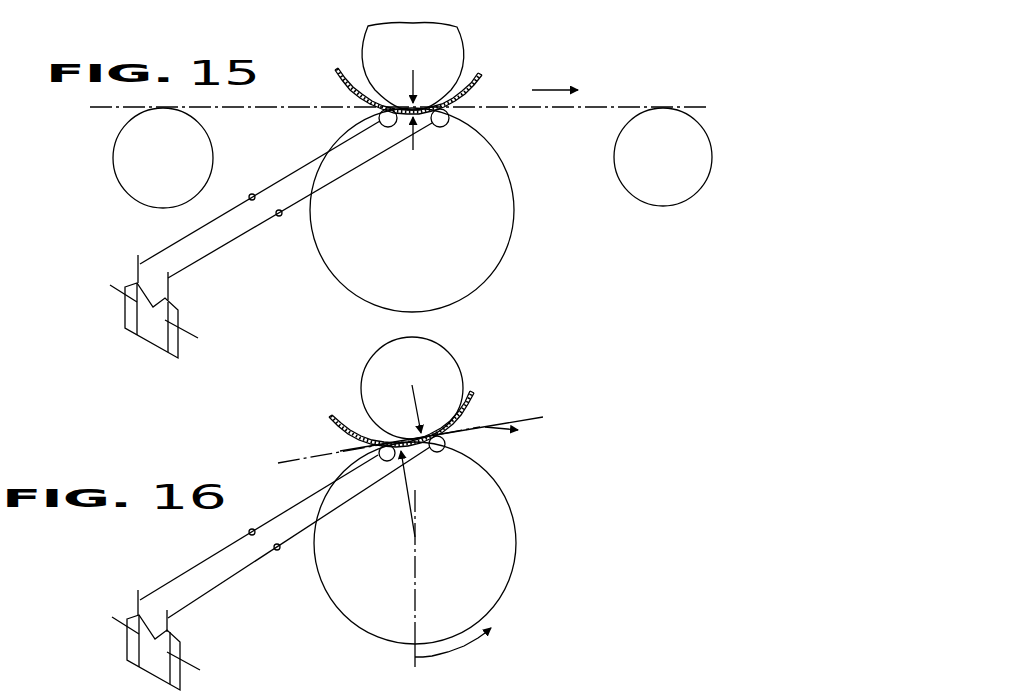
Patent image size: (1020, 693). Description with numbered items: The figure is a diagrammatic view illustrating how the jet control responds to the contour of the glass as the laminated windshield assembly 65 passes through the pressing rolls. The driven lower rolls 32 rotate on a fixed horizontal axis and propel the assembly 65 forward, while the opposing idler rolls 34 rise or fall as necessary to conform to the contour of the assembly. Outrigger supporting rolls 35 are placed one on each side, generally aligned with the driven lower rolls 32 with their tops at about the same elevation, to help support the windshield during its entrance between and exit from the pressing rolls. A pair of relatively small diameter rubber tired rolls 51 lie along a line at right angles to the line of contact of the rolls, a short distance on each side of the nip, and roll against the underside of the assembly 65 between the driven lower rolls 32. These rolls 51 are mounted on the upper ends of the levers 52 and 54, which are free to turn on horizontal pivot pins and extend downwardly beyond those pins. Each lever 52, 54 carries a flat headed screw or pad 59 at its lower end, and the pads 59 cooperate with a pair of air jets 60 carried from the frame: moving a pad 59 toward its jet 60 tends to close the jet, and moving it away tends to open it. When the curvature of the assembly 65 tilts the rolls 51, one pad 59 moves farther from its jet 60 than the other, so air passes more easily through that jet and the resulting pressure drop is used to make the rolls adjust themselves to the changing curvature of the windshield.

In FIG. 15, the driven lower rolls 32 is at (412, 210).
In FIG. 16, the driven lower rolls 32 is at (415, 543).
In FIG. 15, the idler rolls 34 is at (413, 66).
In FIG. 16, the idler rolls 34 is at (412, 388).
In FIG. 15, the outrigger supporting rolls 35 is at (176, 159).
In FIG. 15, the rubber tired rolls 51 is at (379, 117).
In FIG. 16, the rubber tired rolls 51 is at (378, 456).
In FIG. 15, the lever 52 is at (238, 240).
In FIG. 16, the lever 52 is at (240, 568).
In FIG. 15, the lever 54 is at (272, 184).
In FIG. 16, the lever 54 is at (274, 521).
In FIG. 15, the flat headed screw or pad 59 is at (138, 278).
In FIG. 16, the flat headed screw or pad 59 is at (140, 610).
In FIG. 15, the air jets 60 is at (132, 284).
In FIG. 16, the air jets 60 is at (134, 616).
In FIG. 15, the assembly 65 is at (482, 73).
In FIG. 16, the assembly 65 is at (330, 424).